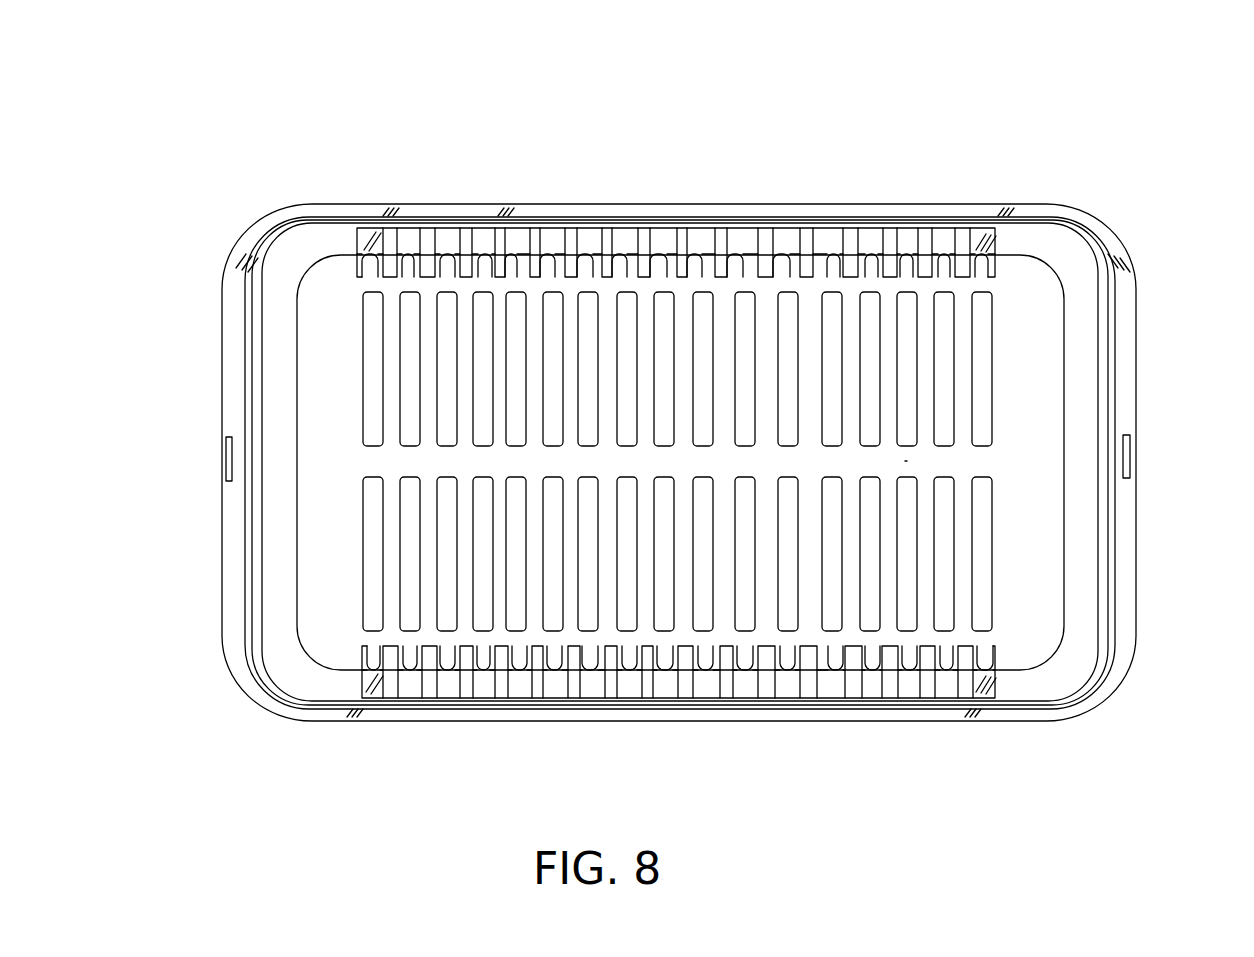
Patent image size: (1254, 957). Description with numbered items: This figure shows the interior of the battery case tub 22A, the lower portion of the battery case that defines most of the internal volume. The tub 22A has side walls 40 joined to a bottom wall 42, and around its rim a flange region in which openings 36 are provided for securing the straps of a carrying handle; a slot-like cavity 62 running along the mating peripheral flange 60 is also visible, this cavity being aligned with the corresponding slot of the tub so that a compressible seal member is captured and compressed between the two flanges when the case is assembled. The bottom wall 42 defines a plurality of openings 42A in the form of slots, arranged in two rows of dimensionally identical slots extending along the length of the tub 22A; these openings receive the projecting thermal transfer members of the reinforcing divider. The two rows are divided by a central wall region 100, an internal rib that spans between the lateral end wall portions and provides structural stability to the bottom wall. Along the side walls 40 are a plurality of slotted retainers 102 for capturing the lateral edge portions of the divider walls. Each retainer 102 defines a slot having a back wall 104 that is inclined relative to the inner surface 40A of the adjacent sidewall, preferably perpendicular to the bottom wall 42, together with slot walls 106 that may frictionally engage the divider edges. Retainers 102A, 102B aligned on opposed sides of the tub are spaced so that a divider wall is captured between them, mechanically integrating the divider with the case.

The tub 22A is at (691, 84).
The side walls 40 is at (274, 279).
The inner surface of the sidewalls 40A is at (1010, 248).
The bottom wall 42 is at (307, 293).
The openings 42A is at (372, 395).
The peripheral flange 60 is at (1108, 273).
The cavity 62 is at (312, 222).
The openings 36 is at (1142, 451).
The central wall region 100 is at (897, 459).
The slotted retainers 102 is at (908, 245).
The retainer 102A is at (789, 242).
The retainer 102B is at (788, 690).
The back wall 104 is at (832, 260).
The walls 106 is at (408, 256).